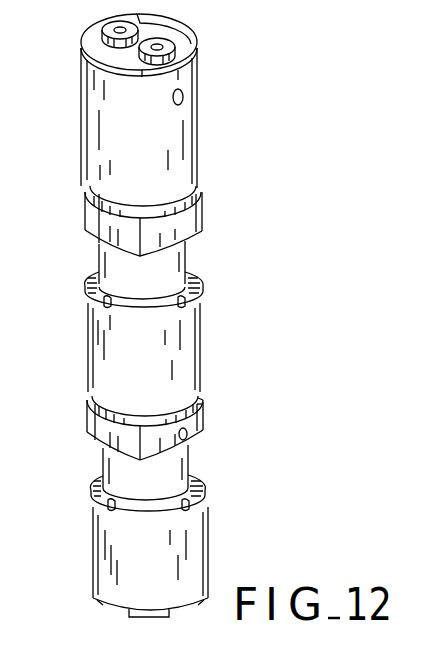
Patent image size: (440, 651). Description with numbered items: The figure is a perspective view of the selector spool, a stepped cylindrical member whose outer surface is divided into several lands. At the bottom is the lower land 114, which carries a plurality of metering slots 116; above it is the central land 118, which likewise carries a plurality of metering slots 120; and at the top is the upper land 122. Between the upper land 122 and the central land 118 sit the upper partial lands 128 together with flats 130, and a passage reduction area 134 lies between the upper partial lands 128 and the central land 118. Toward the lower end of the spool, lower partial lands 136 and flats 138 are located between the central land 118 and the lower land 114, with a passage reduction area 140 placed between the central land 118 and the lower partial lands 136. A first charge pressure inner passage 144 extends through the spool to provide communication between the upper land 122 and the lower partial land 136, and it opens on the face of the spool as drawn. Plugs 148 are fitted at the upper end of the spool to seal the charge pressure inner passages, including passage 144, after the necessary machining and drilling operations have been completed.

The lower land 114 is at (196, 546).
The metering slots 116 is at (109, 512).
The central land 118 is at (198, 336).
The metering slots 120 is at (104, 302).
The upper land 122 is at (97, 104).
The upper partial lands 128 is at (196, 218).
The flats 130 is at (97, 215).
The passage reduction area 134 is at (101, 250).
The lower partial lands 136 is at (235, 401).
The flats 138 is at (101, 434).
The passage reduction area 140 is at (203, 402).
The first charge pressure inner passage 144 is at (186, 100).
The plugs 148 is at (118, 27).